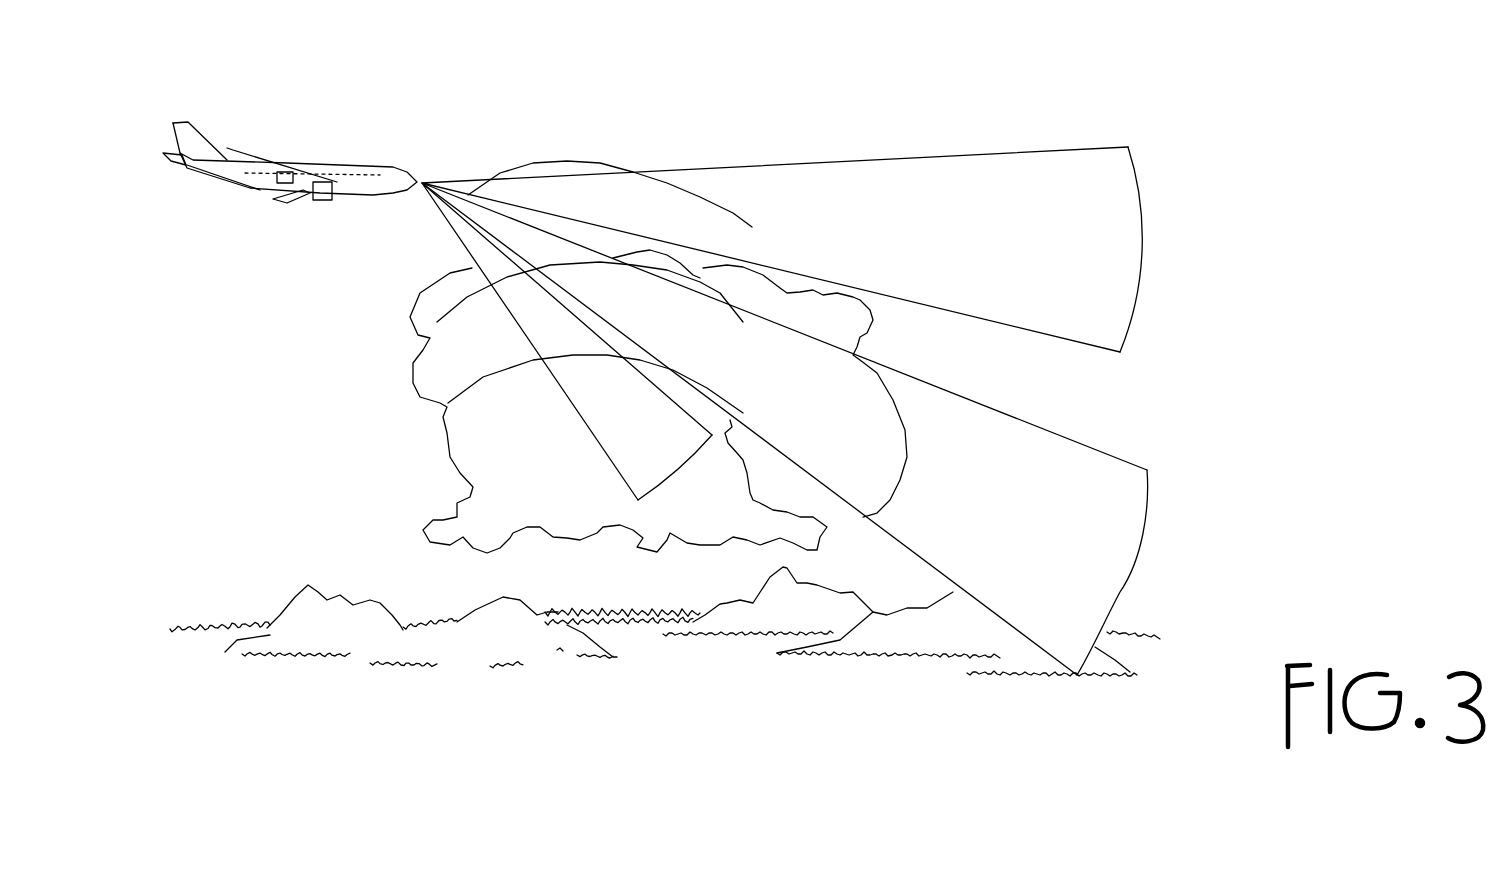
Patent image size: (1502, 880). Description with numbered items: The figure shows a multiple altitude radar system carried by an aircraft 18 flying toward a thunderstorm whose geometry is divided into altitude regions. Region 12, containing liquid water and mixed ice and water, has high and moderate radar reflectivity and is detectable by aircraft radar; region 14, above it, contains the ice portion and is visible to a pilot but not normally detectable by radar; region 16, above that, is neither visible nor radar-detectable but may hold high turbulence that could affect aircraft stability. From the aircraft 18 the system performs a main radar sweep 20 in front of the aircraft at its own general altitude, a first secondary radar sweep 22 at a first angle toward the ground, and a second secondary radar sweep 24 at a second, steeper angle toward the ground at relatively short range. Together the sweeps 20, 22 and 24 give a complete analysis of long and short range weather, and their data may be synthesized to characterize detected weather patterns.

The region 12 is at (707, 384).
The region 14 is at (720, 292).
The region 16 is at (695, 194).
The aircraft 18 is at (353, 165).
The main radar sweep 20 is at (870, 157).
The first secondary radar sweep 22 is at (972, 400).
The second secondary radar sweep 24 is at (590, 437).